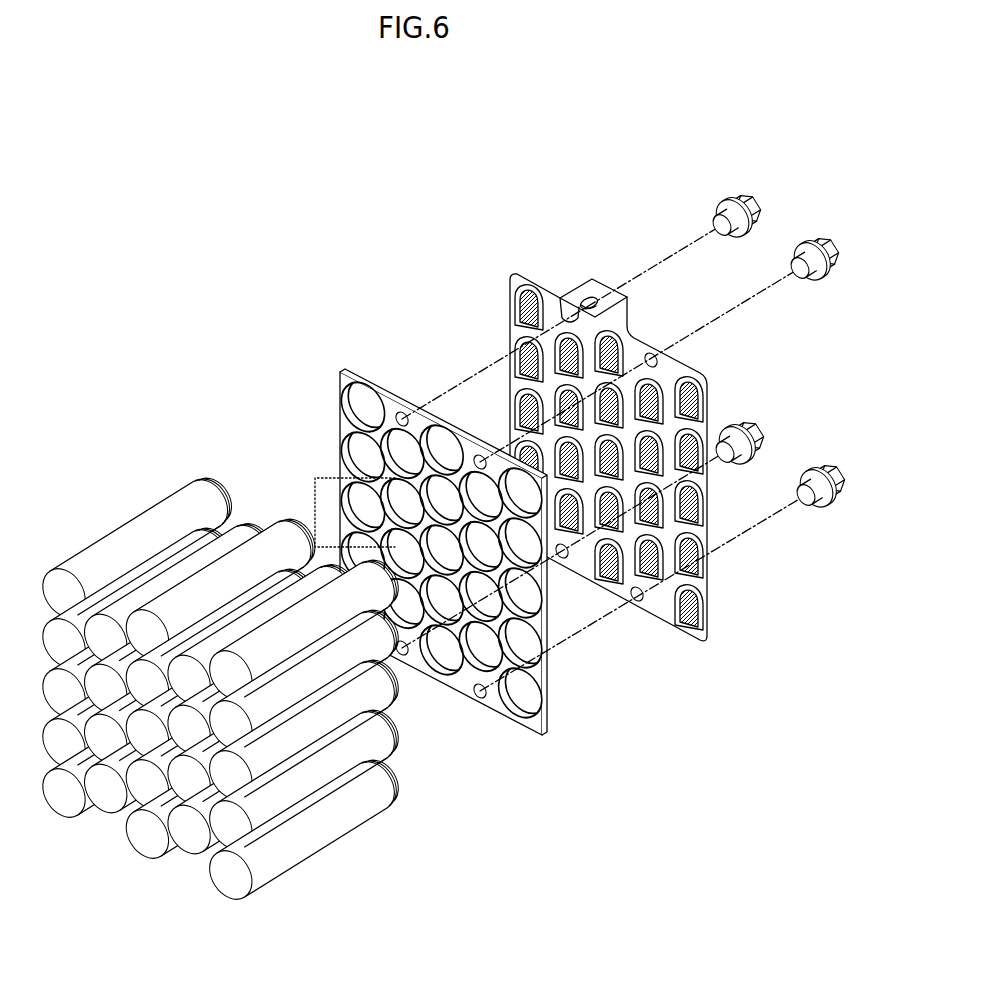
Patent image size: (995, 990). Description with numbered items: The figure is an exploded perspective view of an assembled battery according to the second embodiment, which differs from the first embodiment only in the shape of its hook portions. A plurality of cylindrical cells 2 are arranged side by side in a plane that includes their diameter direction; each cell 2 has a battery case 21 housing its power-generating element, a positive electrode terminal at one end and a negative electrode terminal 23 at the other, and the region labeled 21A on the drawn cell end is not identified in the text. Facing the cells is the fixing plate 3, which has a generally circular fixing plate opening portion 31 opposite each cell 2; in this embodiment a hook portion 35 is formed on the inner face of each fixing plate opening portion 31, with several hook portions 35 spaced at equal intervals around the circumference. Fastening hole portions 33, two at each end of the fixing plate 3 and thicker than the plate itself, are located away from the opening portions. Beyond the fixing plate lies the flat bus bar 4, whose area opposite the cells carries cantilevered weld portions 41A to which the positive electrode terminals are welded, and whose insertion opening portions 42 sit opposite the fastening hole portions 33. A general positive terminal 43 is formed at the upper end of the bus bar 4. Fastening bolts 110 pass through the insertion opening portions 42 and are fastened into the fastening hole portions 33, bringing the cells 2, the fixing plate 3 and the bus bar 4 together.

The cell 2 is at (237, 717).
The battery case 21 is at (320, 786).
The cell electrode terminal 21A is at (385, 811).
The negative electrode terminal 23 is at (227, 879).
The fixing plate 3 is at (450, 517).
The fixing plate opening portion 31 is at (378, 388).
The fastening hole portion 33 is at (412, 398).
The hook portion 35 is at (340, 374).
The bus bar 4 is at (626, 432).
The weld portion 41A is at (516, 300).
The insertion opening portion 42 is at (653, 351).
The general positive terminal 43 is at (580, 296).
The fastening bolt 110 is at (741, 196).